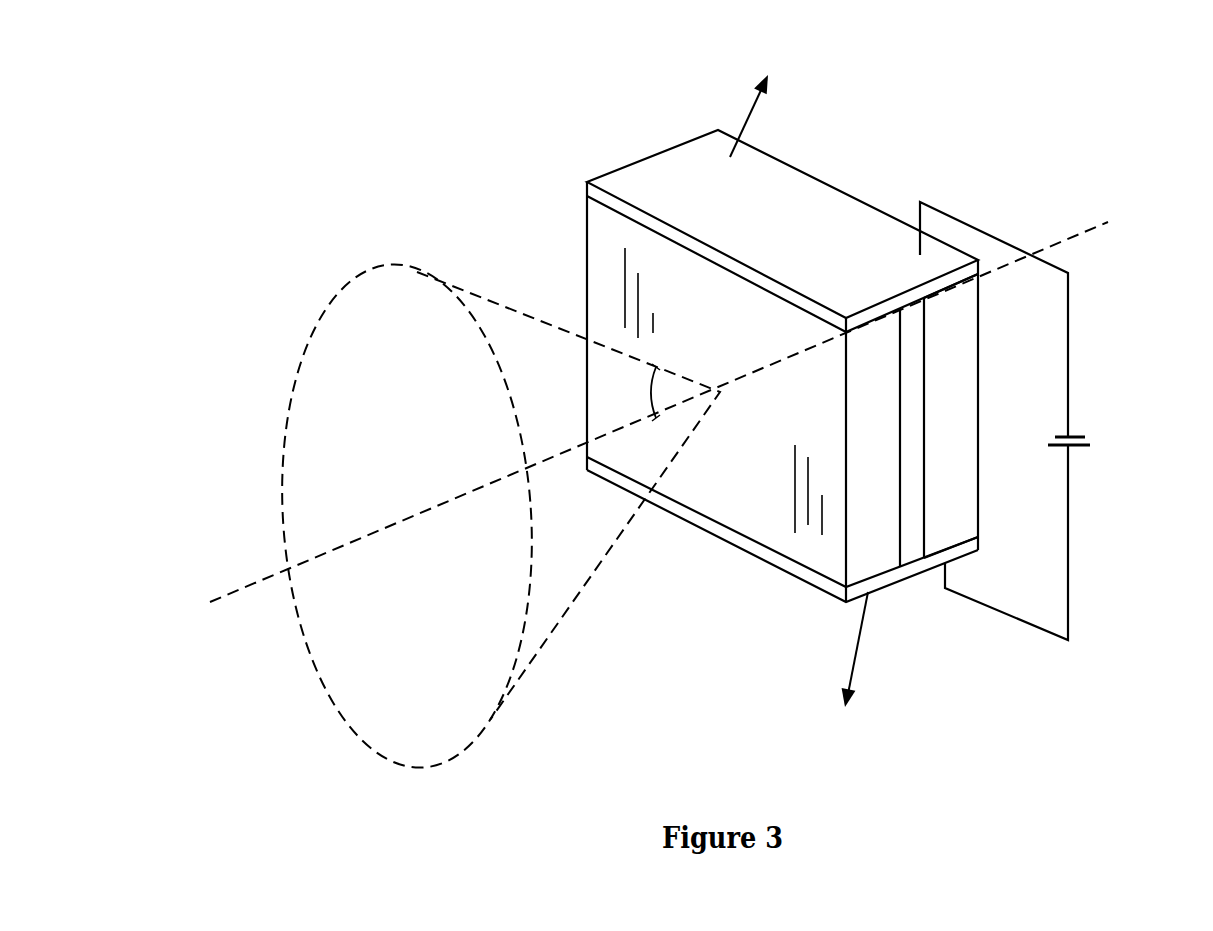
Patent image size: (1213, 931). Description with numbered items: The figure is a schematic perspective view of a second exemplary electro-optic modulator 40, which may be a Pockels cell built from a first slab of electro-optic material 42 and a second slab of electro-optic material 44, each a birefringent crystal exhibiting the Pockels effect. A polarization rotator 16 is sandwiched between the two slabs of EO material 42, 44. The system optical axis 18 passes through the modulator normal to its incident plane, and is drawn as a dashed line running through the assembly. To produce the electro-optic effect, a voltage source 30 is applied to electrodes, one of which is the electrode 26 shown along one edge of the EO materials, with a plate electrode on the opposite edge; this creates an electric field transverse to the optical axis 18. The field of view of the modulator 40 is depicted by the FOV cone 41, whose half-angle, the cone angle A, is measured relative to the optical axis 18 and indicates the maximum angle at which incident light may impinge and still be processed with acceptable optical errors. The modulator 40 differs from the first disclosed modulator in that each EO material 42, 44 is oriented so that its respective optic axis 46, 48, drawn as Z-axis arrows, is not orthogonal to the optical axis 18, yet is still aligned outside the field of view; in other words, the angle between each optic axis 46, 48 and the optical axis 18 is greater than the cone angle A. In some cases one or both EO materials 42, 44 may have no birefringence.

The polarization rotator 16 is at (913, 483).
The optical axis 18 is at (247, 583).
The electrode 26 is at (638, 183).
The voltage source 30 is at (1112, 476).
The electro-optic modulator 40 is at (990, 103).
The FOV cone 41 is at (392, 203).
The first slab of electro-optic material 42 is at (873, 548).
The second slab of electro-optic material 44 is at (967, 325).
The optic axis of first EO material 46 is at (748, 112).
The optic axis of second EO material 48 is at (858, 652).